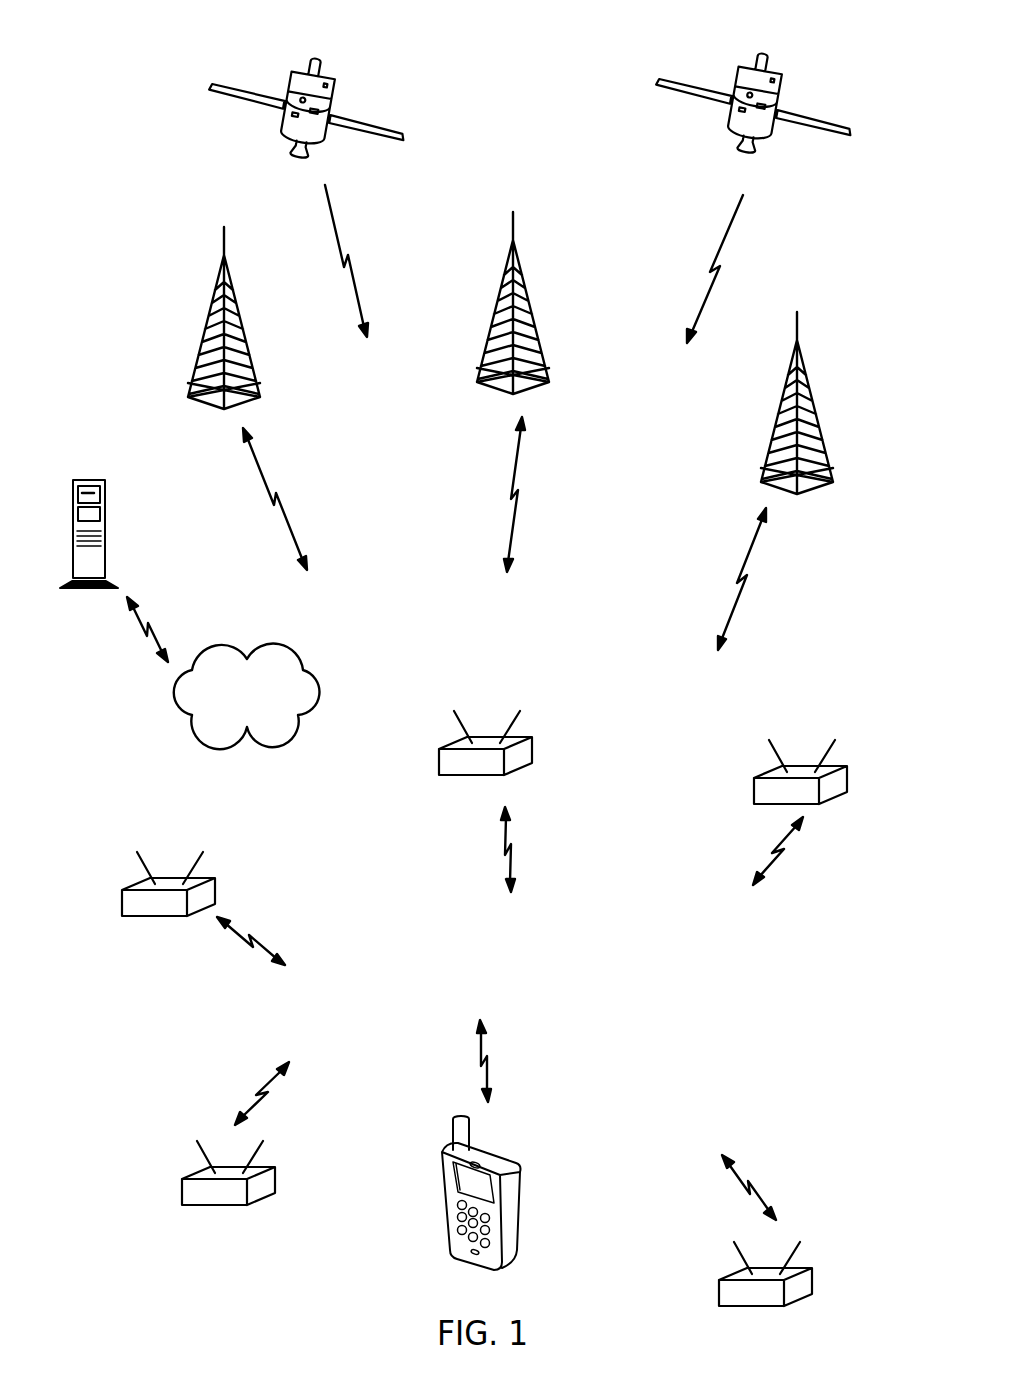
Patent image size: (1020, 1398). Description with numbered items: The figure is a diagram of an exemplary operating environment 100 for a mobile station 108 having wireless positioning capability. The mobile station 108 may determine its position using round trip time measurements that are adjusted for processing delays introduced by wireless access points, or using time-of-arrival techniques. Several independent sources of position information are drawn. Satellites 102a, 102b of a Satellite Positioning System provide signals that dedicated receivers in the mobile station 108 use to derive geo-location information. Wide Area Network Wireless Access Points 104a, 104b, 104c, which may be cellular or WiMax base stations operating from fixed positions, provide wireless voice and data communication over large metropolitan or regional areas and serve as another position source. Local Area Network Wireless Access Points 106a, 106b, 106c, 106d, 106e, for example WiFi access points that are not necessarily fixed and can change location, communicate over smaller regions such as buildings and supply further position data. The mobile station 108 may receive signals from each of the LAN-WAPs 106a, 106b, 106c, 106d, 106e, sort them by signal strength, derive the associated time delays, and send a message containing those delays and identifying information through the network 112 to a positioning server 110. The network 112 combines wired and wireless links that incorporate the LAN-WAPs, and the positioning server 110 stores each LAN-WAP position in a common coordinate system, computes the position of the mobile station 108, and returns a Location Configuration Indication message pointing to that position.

The operating environment 100 is at (148, 70).
The SPS satellite 102a is at (322, 61).
The SPS satellite 102b is at (762, 52).
The Wide Area Network Wireless Access Point 104a is at (224, 232).
The Wide Area Network Wireless Access Point 104b is at (514, 222).
The Wide Area Network Wireless Access Point 104c is at (798, 320).
The Local Area Network Wireless Access Point 106a is at (213, 878).
The Local Area Network Wireless Access Point 106b is at (532, 748).
The Local Area Network Wireless Access Point 106c is at (754, 790).
The Local Area Network Wireless Access Point 106d is at (274, 1178).
The Local Area Network Wireless Access Point 106e is at (719, 1290).
The mobile station 108 is at (520, 1175).
The positioning server 110 is at (87, 480).
The network 112 is at (270, 651).